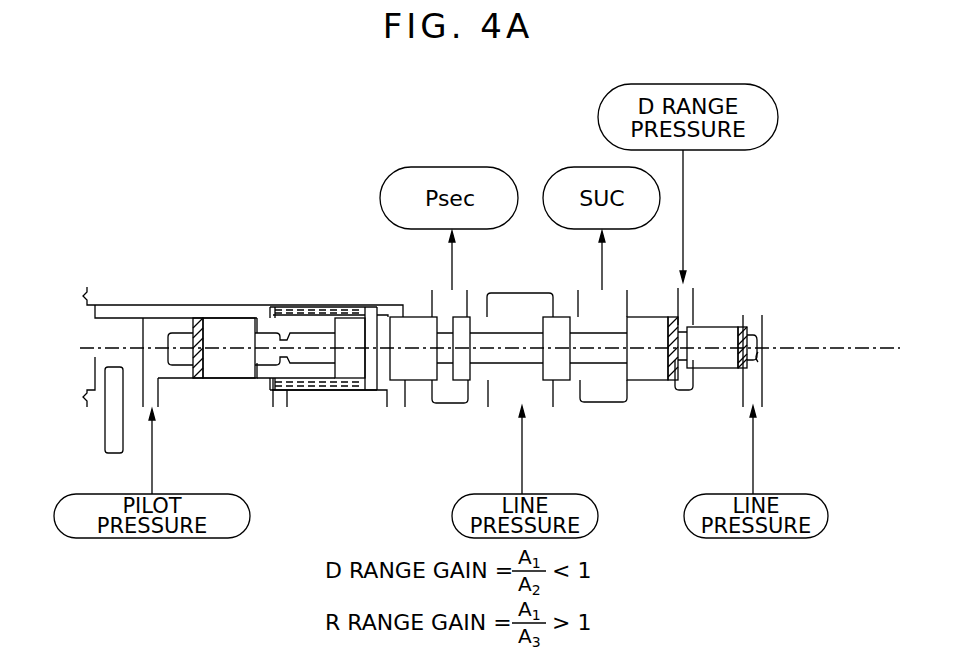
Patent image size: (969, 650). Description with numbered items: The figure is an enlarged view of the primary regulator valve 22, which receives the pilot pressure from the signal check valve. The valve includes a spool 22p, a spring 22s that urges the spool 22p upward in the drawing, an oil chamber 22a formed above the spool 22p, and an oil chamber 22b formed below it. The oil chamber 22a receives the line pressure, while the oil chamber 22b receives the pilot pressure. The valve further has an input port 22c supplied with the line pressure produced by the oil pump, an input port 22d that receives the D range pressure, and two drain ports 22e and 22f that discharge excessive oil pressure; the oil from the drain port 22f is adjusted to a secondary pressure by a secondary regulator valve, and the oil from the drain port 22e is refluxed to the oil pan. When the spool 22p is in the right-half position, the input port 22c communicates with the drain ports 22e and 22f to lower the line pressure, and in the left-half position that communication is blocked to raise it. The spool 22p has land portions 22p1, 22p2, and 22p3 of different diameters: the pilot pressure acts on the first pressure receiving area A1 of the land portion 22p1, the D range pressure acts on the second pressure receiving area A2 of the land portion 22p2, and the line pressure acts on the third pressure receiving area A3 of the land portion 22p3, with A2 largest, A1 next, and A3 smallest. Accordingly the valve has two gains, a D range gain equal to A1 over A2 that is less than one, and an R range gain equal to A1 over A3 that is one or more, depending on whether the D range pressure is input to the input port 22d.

The primary regulator valve 22 is at (437, 122).
The oil chamber 22a is at (763, 357).
The oil chamber 22b is at (160, 318).
The input port 22c is at (495, 405).
The input port 22d is at (690, 288).
The drain port 22e is at (610, 290).
The drain port 22f is at (458, 290).
The spool 22p is at (770, 332).
The land portion 22p1 is at (225, 318).
The land portion 22p2 is at (640, 363).
The land portion 22p3 is at (712, 337).
The spring 22s is at (307, 312).
The first pressure receiving area A1 is at (199, 378).
The second pressure receiving area A2 is at (666, 380).
The third pressure receiving area A3 is at (748, 358).